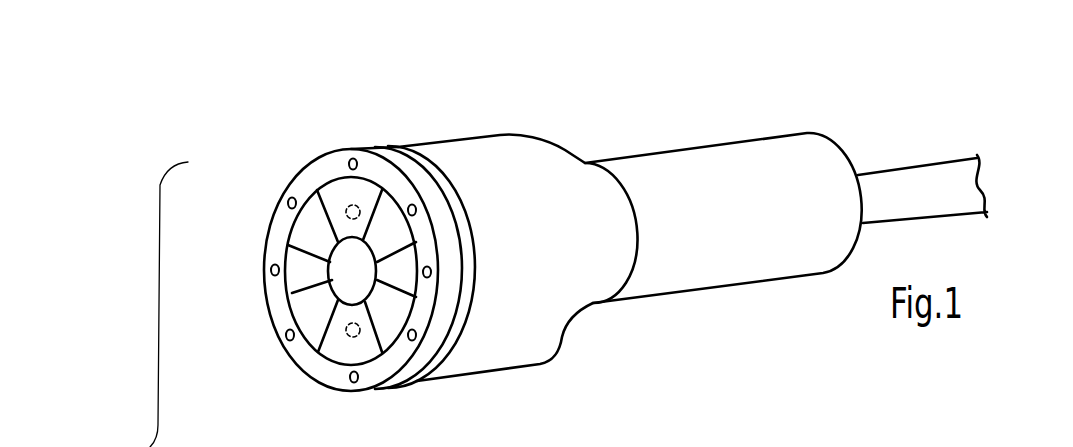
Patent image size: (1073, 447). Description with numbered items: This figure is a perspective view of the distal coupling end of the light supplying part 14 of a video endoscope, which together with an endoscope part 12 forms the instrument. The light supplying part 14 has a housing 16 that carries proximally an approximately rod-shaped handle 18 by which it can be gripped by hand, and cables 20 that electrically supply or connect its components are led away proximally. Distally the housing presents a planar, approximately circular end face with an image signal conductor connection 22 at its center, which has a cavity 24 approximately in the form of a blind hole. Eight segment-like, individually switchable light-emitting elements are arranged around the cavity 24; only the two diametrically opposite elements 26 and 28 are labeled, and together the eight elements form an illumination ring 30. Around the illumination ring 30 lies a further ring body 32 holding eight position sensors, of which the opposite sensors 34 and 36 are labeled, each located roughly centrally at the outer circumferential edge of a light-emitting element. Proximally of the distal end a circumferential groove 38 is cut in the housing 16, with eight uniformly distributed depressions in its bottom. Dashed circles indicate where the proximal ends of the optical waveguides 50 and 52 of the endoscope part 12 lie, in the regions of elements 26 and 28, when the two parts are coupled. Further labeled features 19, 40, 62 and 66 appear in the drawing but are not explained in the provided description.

The endoscope part 12 is at (747, 446).
The light supplying part 14 is at (693, 92).
The housing 16 is at (480, 134).
The handle 18 is at (757, 155).
The front end section 19 is at (155, 304).
The cables 20 is at (927, 183).
The image signal conductor connection 22 is at (350, 257).
The cavity 24 is at (338, 290).
The light-emitting element 26 is at (338, 190).
The light-emitting element 28 is at (337, 348).
The illumination ring 30 is at (310, 335).
The ring body 32 is at (292, 177).
The position sensor 34 is at (353, 157).
The position sensor 36 is at (353, 382).
The circumferential groove 38 is at (425, 163).
The base 40 is at (617, 446).
The optical waveguide 50 is at (358, 217).
The optical waveguide 52 is at (362, 325).
The support 62 is at (543, 442).
The mount 66 is at (407, 446).